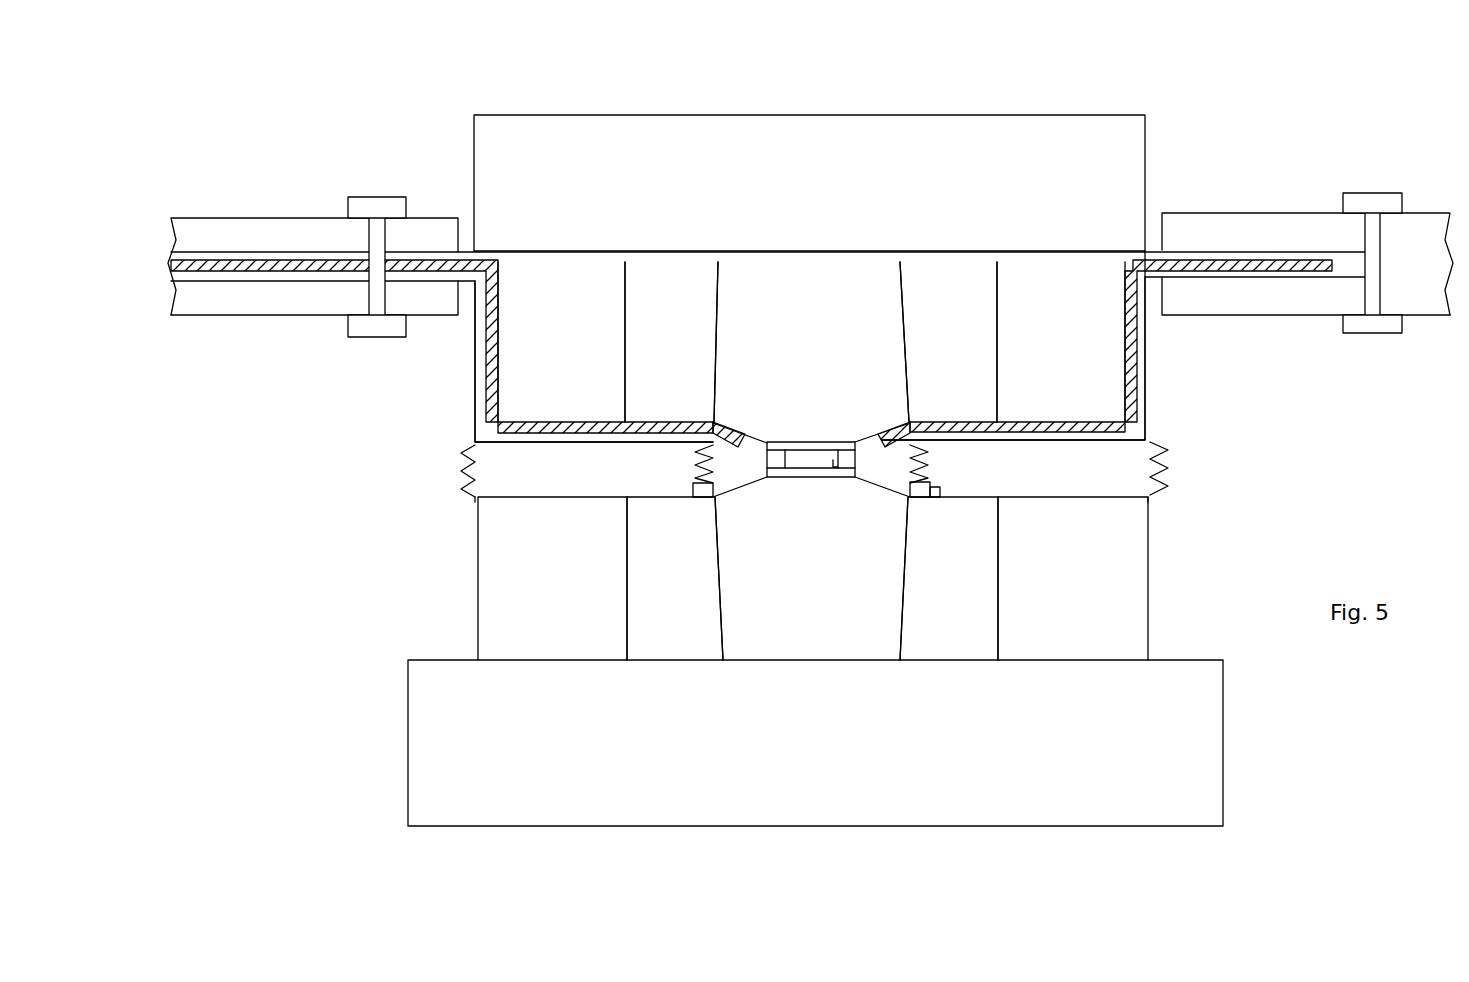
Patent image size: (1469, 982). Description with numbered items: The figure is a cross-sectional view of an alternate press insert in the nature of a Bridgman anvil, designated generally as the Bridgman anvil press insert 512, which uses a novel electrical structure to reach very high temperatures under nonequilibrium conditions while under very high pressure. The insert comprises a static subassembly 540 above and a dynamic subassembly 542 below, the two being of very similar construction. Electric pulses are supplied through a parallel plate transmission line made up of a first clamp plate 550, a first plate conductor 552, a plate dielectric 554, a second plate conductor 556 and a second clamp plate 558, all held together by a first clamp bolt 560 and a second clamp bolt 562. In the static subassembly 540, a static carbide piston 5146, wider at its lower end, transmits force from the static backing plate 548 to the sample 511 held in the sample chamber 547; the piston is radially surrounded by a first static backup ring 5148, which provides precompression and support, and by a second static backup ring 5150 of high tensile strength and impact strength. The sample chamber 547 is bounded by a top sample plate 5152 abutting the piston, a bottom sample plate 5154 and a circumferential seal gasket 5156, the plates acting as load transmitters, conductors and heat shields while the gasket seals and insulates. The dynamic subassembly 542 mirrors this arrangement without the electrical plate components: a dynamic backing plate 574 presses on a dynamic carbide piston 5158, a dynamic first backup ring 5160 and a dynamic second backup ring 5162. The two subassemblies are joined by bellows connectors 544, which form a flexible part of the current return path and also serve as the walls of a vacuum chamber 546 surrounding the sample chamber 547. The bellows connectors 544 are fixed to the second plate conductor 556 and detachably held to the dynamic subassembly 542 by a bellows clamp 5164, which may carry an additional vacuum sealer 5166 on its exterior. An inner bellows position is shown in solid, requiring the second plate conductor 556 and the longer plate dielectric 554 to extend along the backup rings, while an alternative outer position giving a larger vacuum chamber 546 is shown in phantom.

The Bridgman anvil press insert 512 is at (1188, 171).
The static subassembly 540 is at (427, 402).
The dynamic subassembly 542 is at (415, 633).
The bellows connector 544 is at (458, 466).
The vacuum chamber 546 is at (510, 482).
The sample chamber 547 is at (835, 467).
The static backing plate 548 is at (809, 183).
The first clamp plate 550 is at (242, 228).
The first plate conductor 552 is at (122, 236).
The plate dielectric 554 is at (166, 266).
The second plate conductor 556 is at (170, 281).
The second clamp plate 558 is at (228, 307).
The first clamp bolt 560 is at (378, 208).
The second clamp bolt 562 is at (1378, 205).
The dynamic backing plate 574 is at (815, 743).
The sample 511 is at (858, 455).
The static carbide piston 5146 is at (811, 342).
The first static backup ring 5148 is at (811, 342).
The second static backup ring 5150 is at (811, 342).
The top sample plate 5152 is at (827, 443).
The bottom sample plate 5154 is at (830, 477).
The seal gasket 5156 is at (775, 455).
The dynamic carbide piston 5158 is at (811, 578).
The dynamic first backup ring 5160 is at (812, 578).
The dynamic second backup ring 5162 is at (808, 578).
The bellows clamp 5164 is at (915, 497).
The vacuum sealer 5166 is at (935, 497).